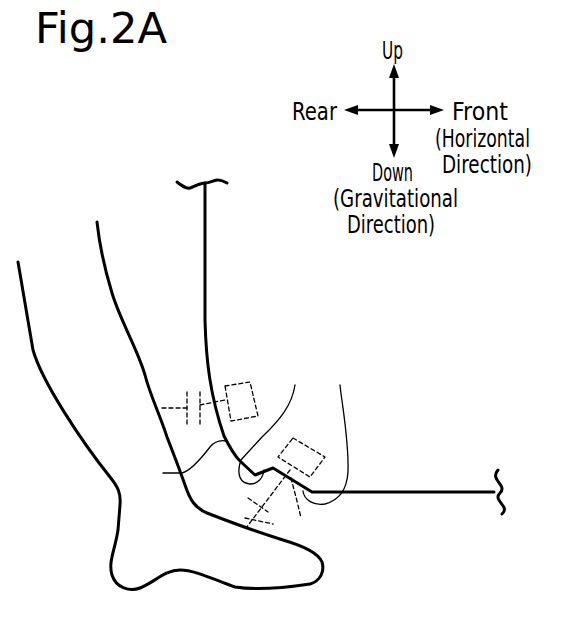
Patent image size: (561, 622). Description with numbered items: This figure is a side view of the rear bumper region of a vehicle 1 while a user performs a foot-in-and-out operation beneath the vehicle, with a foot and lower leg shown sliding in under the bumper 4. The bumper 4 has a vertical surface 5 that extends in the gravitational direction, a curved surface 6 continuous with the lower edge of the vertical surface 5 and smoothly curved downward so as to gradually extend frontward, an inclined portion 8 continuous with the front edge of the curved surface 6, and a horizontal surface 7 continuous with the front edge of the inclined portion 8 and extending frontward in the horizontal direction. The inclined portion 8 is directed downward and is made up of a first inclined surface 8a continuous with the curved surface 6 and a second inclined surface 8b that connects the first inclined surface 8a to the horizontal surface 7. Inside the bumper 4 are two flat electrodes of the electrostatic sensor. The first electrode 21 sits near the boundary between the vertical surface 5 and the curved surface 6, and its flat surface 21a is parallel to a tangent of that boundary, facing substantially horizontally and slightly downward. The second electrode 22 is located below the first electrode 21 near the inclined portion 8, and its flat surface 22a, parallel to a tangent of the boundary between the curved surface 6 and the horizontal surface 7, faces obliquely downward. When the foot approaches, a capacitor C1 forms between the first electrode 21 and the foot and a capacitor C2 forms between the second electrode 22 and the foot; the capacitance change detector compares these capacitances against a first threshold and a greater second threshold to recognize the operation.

The vehicle 1 is at (340, 327).
The bumper 4 is at (272, 196).
The vertical surface 5 is at (204, 250).
The curved surface 6 is at (170, 405).
The horizontal surface 7 is at (425, 492).
The inclined portion 8 is at (297, 412).
The first inclined surface 8a is at (274, 421).
The second inclined surface 8b is at (327, 431).
The first electrode 21 is at (237, 382).
The flat surface 21a is at (222, 398).
The second electrode 22 is at (318, 443).
The flat surface 22a is at (286, 508).
The capacitor C1 is at (190, 439).
The capacitor C2 is at (215, 499).